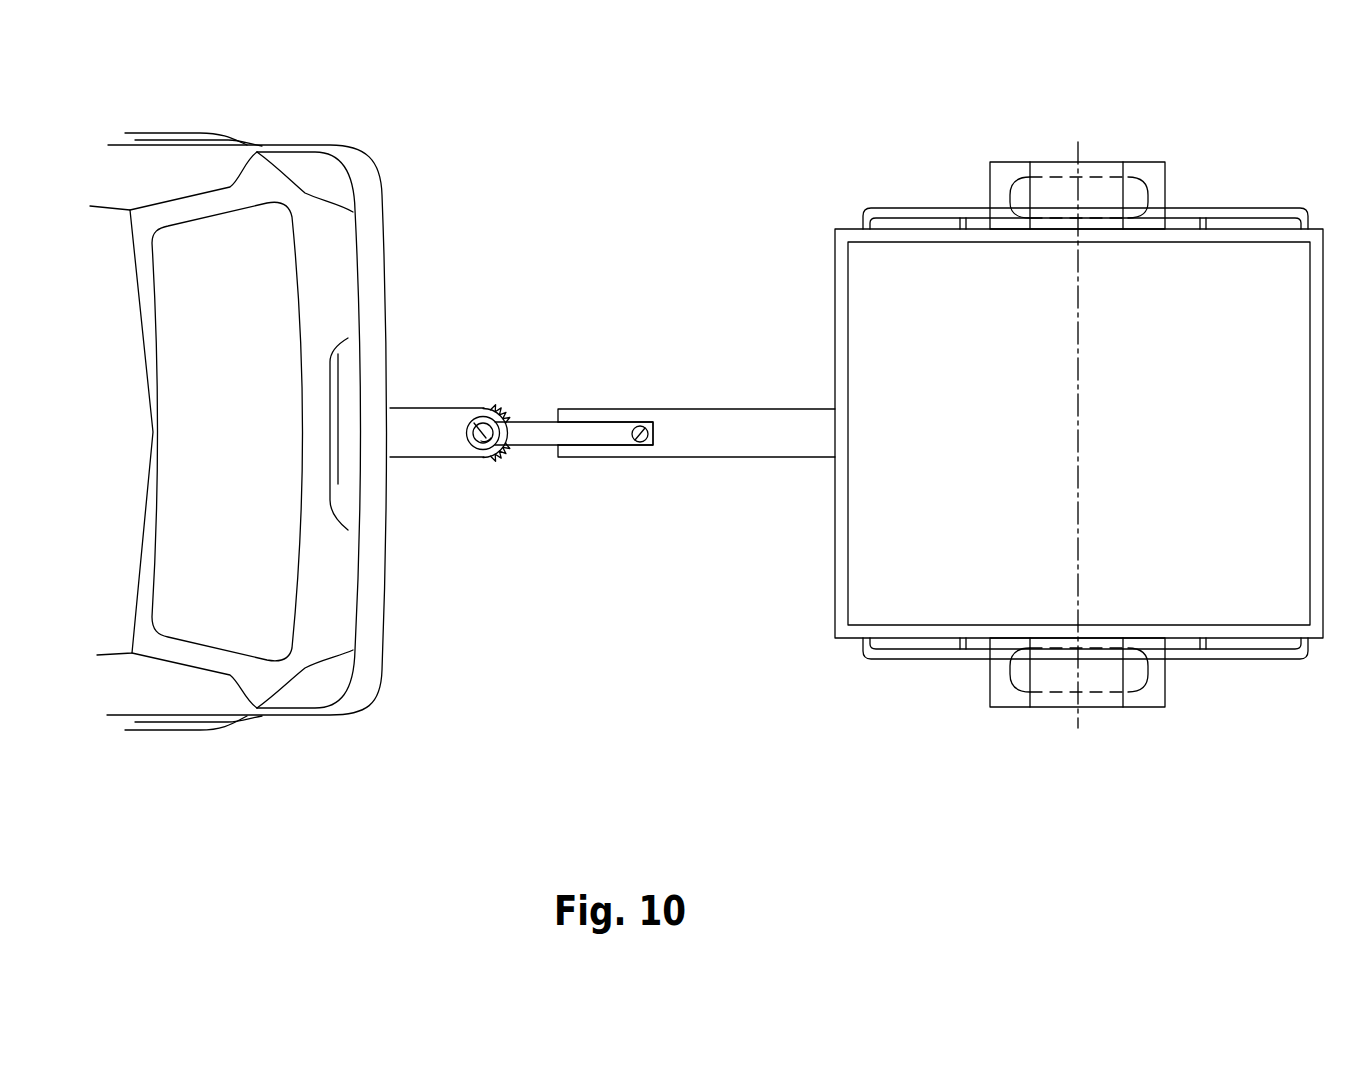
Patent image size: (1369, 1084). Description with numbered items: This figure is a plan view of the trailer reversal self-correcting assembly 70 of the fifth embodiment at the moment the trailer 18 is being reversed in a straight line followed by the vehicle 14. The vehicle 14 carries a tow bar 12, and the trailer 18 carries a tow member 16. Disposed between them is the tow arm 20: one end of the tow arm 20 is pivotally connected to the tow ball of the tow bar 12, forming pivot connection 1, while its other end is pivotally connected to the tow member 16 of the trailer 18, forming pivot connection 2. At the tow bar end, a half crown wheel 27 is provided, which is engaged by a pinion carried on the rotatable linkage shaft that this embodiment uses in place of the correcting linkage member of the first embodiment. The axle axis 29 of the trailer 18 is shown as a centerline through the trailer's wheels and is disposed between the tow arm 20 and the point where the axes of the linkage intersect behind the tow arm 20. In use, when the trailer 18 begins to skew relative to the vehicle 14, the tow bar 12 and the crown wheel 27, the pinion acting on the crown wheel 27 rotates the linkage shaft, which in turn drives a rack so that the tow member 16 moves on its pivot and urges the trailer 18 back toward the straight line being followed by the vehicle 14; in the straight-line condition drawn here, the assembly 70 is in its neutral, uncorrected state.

The trailer reversal self-correcting assembly 70 is at (529, 232).
The vehicle 14 is at (357, 693).
The tow bar 12 is at (415, 438).
The pivot connection 1 is at (468, 410).
The half crown wheel 27 is at (505, 467).
The tow arm 20 is at (562, 432).
The pivot connection 2 is at (653, 422).
The tow member 16 is at (735, 440).
The trailer 18 is at (845, 633).
The axle axis 29 is at (1078, 258).